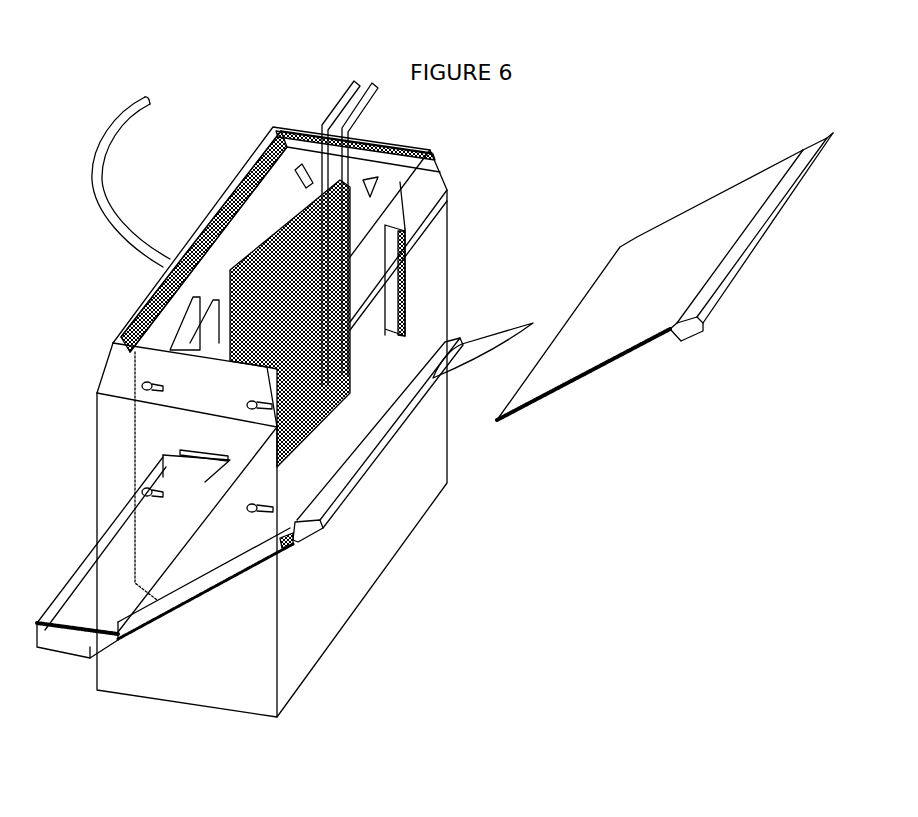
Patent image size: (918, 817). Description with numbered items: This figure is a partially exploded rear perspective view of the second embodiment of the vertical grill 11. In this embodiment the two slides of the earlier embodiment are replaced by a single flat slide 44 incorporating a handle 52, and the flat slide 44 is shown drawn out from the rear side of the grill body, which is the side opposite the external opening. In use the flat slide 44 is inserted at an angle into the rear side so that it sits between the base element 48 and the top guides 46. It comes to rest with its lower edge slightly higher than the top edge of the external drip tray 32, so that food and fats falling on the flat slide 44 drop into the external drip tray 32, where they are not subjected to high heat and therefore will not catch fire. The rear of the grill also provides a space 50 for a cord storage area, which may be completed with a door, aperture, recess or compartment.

The vertical grill 11 is at (49, 118).
The external drip tray 32 is at (80, 615).
The flat slide 44 is at (286, 549).
The top guides 46 is at (378, 375).
The base element 48 is at (193, 603).
The space 50 is at (357, 537).
The handle 52 is at (495, 339).